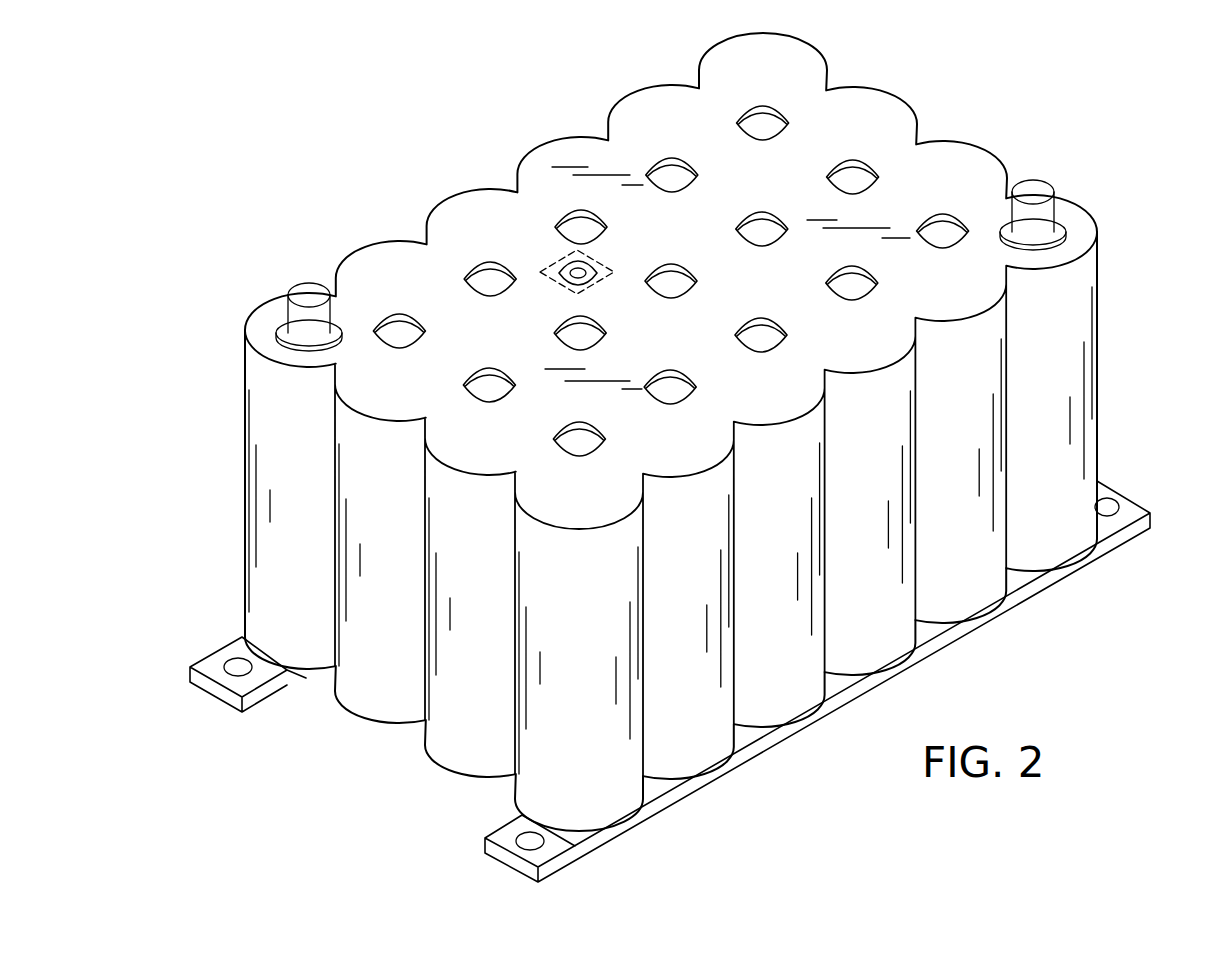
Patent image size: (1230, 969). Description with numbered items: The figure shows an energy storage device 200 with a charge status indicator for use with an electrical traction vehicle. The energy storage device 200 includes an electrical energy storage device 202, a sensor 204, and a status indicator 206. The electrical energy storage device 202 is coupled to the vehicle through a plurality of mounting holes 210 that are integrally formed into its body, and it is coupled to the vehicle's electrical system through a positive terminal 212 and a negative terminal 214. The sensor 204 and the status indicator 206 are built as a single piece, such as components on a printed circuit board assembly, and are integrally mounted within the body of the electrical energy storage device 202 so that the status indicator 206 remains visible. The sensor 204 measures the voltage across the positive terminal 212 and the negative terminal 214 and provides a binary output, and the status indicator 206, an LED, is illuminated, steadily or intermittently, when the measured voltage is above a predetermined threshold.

The energy storage device 200 is at (396, 146).
The electrical energy storage device 202 is at (1098, 372).
The sensor 204 is at (603, 258).
The status indicator 206 is at (592, 280).
The mounting holes 210 is at (237, 666).
The positive terminal 212 is at (308, 292).
The negative terminal 214 is at (1042, 185).